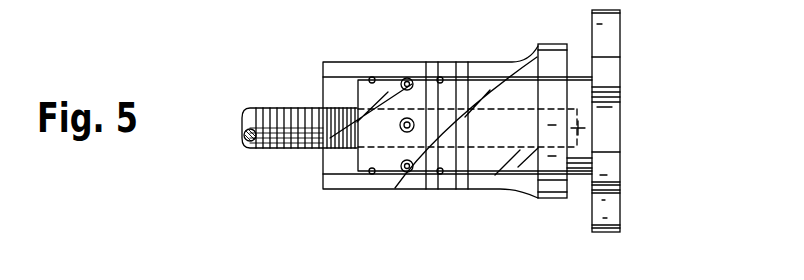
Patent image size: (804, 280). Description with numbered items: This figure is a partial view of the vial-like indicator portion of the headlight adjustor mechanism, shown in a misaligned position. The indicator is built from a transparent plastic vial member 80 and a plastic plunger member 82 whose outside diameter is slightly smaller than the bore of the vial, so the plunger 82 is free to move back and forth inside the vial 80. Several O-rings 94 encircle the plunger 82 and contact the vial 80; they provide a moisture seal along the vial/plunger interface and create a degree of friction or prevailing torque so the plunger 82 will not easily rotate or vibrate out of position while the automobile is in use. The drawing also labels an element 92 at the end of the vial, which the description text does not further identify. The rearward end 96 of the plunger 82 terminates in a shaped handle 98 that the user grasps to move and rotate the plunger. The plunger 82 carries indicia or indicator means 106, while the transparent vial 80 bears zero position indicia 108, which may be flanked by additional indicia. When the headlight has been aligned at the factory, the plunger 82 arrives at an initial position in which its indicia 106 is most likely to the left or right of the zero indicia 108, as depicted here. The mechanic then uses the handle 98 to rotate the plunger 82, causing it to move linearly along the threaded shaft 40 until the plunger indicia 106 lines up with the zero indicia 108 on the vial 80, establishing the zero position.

The threaded shaft 40 is at (275, 107).
The vial member 80 is at (502, 190).
The plunger member 82 is at (487, 162).
The flange 92 is at (550, 192).
The O-rings 94 is at (372, 175).
The rearward end 96 is at (580, 93).
The shaped handle 98 is at (612, 208).
The indicator means 106 is at (407, 78).
The zero position indicia 108 is at (447, 63).